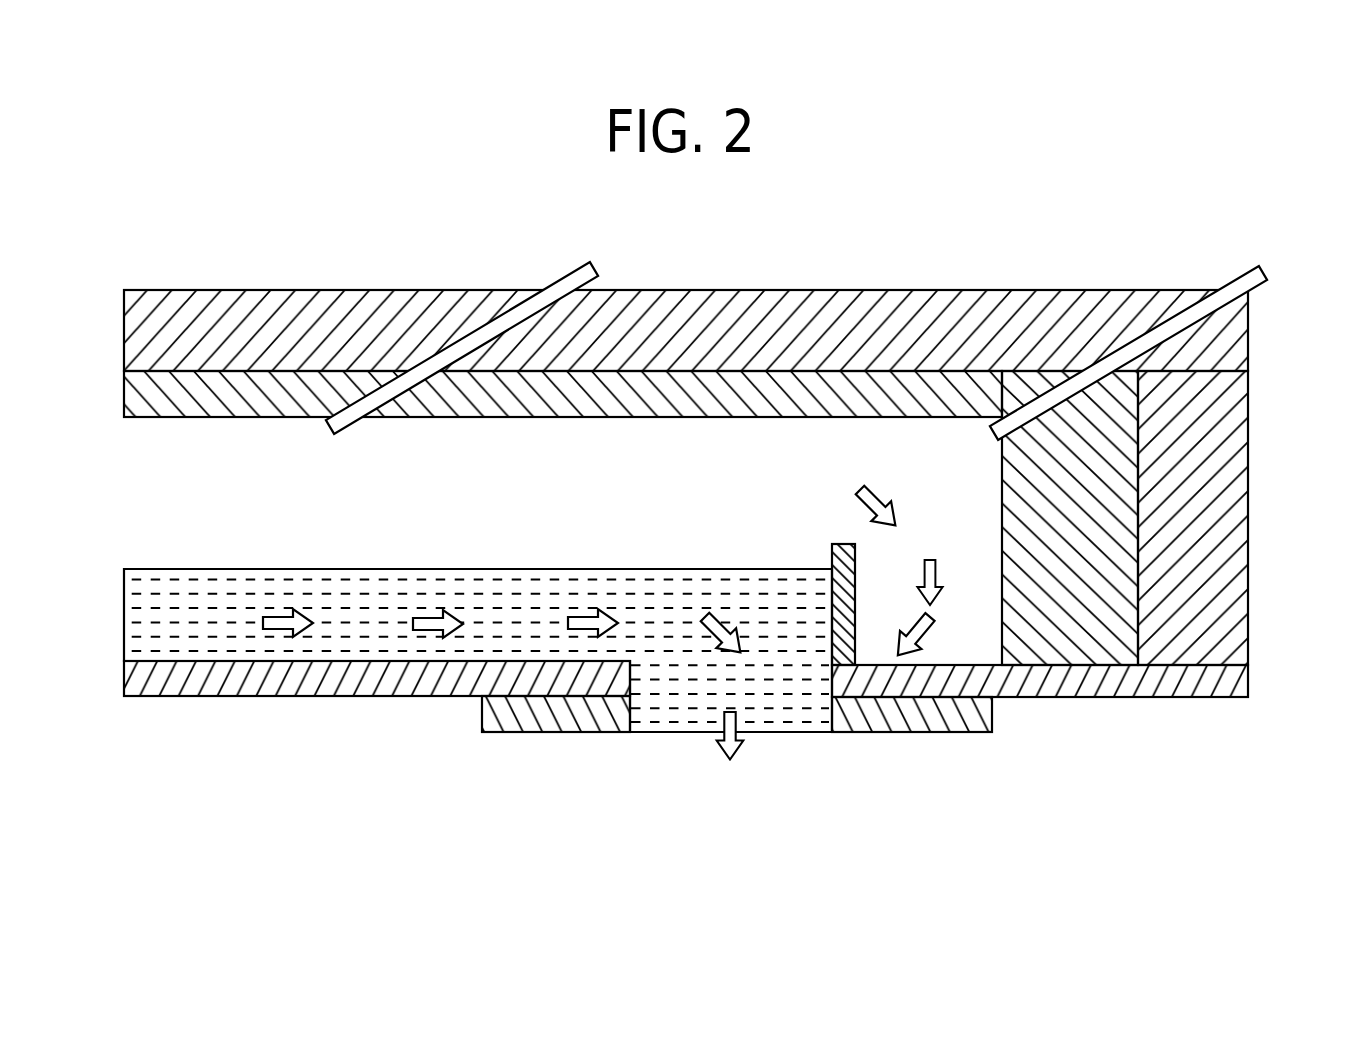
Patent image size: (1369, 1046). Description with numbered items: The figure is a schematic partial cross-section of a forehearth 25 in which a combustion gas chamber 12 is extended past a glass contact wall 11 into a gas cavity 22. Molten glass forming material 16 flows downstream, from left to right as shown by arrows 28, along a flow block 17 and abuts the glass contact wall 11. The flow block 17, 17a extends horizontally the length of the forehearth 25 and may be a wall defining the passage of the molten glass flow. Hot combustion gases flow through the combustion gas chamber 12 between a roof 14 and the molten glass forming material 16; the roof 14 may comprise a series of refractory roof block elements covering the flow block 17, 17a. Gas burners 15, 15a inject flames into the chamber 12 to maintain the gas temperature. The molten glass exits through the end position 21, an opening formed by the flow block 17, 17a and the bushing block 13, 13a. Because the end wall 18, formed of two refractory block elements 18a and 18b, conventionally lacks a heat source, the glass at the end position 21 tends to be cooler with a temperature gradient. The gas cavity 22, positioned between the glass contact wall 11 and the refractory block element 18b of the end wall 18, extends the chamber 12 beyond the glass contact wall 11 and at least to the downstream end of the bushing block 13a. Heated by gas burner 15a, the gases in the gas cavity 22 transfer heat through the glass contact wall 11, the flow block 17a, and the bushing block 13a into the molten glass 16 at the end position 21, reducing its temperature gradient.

The glass contact wall 11 is at (830, 558).
The combustion gas chamber 12 is at (134, 487).
The bushing block 13 is at (560, 718).
The bushing block 13a is at (895, 715).
The roof 14 is at (328, 305).
The gas burner 15 is at (556, 285).
The gas burner 15a is at (1235, 287).
The molten glass forming material 16 is at (150, 625).
The flow block 17 is at (228, 683).
The flow block 17a is at (1108, 686).
The end wall 18 is at (1126, 518).
The refractory block element 18a is at (1218, 437).
The refractory block element 18b is at (1013, 477).
The end position 21 is at (688, 745).
The gas cavity 22 is at (957, 641).
The forehearth 25 is at (1064, 206).
The arrows 28 is at (277, 618).